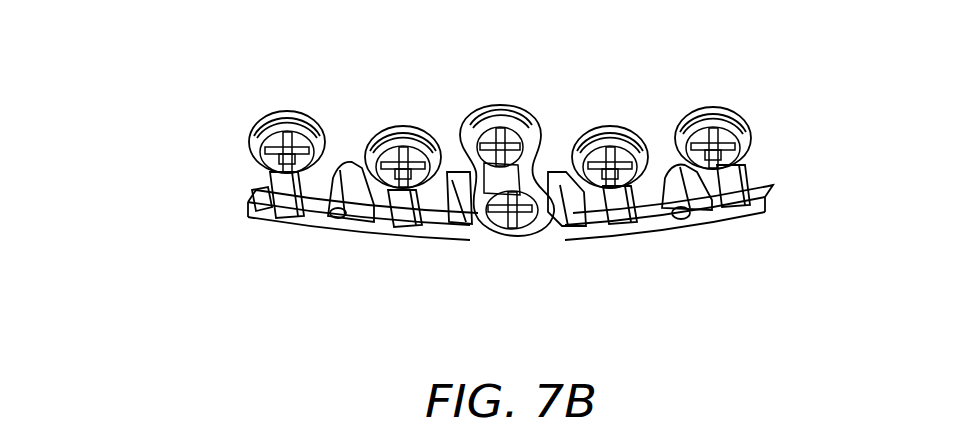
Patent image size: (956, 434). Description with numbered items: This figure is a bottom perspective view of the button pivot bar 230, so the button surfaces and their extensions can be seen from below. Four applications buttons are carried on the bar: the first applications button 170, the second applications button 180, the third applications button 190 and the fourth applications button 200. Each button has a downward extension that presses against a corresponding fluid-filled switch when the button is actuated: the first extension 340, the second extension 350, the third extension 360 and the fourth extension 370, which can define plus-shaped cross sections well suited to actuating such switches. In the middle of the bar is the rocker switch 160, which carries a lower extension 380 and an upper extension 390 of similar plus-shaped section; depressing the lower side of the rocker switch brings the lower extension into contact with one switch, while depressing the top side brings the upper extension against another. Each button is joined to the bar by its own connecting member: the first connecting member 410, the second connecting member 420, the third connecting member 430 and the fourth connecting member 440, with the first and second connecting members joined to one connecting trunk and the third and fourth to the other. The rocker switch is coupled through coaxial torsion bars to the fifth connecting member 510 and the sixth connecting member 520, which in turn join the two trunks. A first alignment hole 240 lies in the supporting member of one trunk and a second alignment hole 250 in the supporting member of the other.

The button pivot bar 230 is at (174, 236).
The first alignment hole 240 is at (719, 242).
The second alignment hole 250 is at (366, 267).
The fourth applications button 200 is at (268, 110).
The third applications button 190 is at (392, 105).
The rocker switch 160 is at (518, 120).
The second applications button 180 is at (629, 127).
The first applications button 170 is at (753, 119).
The fourth extension 370 is at (215, 152).
The third extension 360 is at (368, 128).
The upper extension 390 is at (475, 108).
The lower extension 380 is at (528, 262).
The second extension 350 is at (627, 110).
The first extension 340 is at (736, 100).
The fourth connecting member 440 is at (249, 232).
The third connecting member 430 is at (395, 233).
The sixth connecting member 520 is at (499, 269).
The fifth connecting member 510 is at (586, 236).
The second connecting member 420 is at (659, 250).
The first connecting member 410 is at (748, 181).